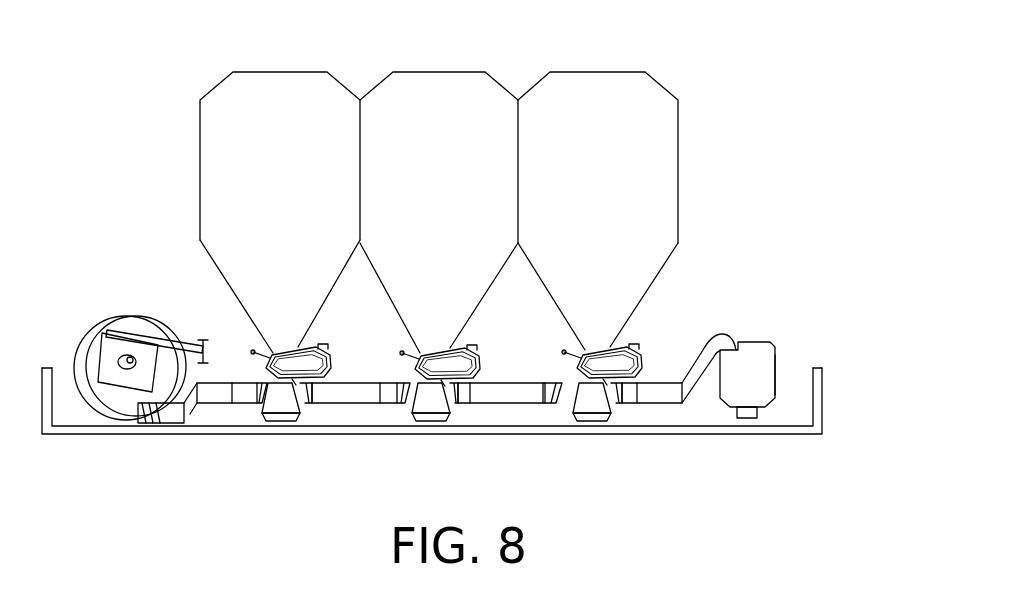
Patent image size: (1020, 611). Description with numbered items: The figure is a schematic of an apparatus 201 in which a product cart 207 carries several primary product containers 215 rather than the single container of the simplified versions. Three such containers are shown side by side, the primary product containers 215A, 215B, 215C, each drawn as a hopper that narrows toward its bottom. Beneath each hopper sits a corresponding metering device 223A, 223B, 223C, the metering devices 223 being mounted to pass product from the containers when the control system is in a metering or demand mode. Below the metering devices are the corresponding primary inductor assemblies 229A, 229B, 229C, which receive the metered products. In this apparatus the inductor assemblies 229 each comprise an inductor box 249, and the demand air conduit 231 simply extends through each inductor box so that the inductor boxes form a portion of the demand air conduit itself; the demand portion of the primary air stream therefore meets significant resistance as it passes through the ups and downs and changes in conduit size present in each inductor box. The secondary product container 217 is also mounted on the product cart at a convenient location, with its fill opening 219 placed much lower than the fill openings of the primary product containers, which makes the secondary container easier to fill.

The apparatus 201 is at (780, 130).
The product cart 207 is at (823, 388).
The primary product containers 215 is at (395, 188).
The primary product container 215A is at (200, 168).
The primary product container 215B is at (495, 79).
The primary product container 215C is at (657, 80).
The secondary product container 217 is at (777, 361).
The fill opening 219 is at (755, 342).
The metering devices 223 is at (536, 311).
The metering device 223A is at (305, 347).
The metering device 223B is at (483, 354).
The metering device 223C is at (643, 350).
The inductor assemblies 229 is at (515, 435).
The primary inductor assembly 229A is at (302, 422).
The primary inductor assembly 229B is at (452, 420).
The primary inductor assembly 229C is at (608, 410).
The demand air conduit 231 is at (222, 383).
The inductor box 249 is at (255, 420).